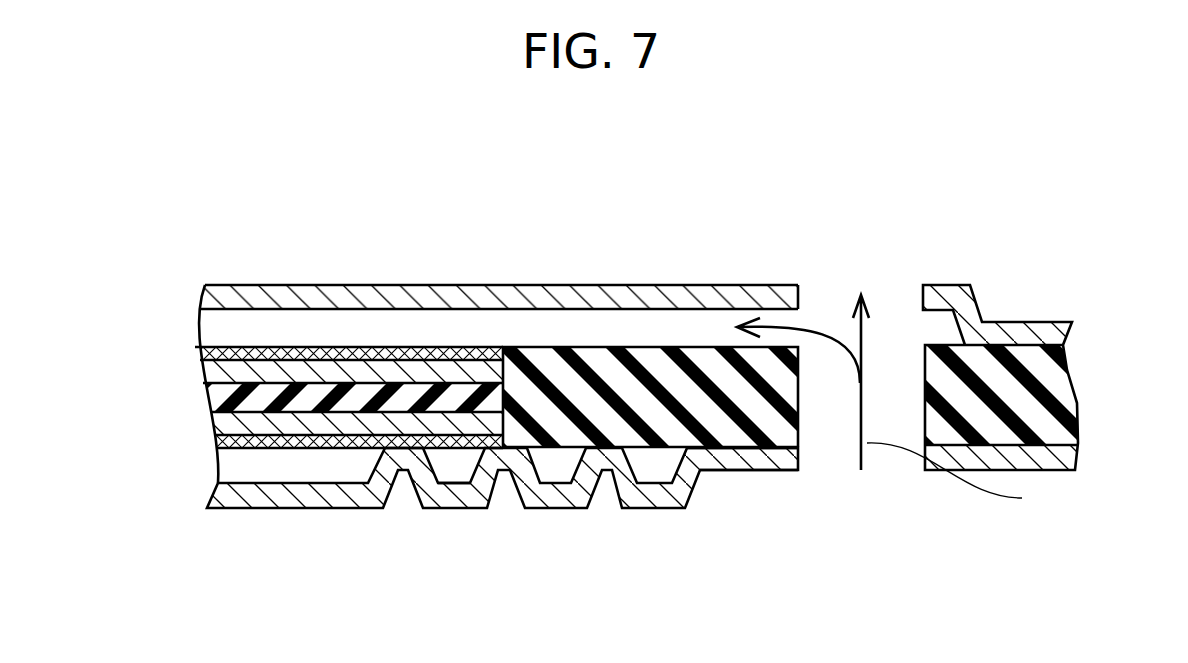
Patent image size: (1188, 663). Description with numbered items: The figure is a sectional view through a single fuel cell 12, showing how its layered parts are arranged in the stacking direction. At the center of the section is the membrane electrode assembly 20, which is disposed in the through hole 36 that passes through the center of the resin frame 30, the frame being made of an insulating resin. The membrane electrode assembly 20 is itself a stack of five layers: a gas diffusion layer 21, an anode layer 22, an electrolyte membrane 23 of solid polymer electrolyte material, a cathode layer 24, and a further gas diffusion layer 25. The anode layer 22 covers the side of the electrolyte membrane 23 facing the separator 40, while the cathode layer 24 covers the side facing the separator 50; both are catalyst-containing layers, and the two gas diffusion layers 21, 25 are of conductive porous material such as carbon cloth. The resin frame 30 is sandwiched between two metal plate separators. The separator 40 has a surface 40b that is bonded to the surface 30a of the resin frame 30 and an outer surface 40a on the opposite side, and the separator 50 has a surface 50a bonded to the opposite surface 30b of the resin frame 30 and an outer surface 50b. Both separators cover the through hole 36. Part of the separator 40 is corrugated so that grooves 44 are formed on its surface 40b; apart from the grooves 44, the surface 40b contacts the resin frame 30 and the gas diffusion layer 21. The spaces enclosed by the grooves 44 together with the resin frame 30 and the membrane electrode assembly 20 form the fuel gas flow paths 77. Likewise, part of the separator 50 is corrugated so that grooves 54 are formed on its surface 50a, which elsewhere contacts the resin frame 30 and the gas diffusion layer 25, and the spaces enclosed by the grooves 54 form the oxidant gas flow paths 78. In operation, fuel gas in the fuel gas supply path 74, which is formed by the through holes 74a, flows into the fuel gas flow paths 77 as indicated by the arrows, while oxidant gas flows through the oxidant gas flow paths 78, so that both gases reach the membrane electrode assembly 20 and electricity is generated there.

The fuel cell 12 is at (112, 216).
The membrane electrode assembly 20 is at (87, 303).
The gas diffusion layer 21 is at (193, 353).
The anode layer 22 is at (205, 376).
The electrolyte membrane 23 is at (218, 392).
The cathode layer 24 is at (220, 422).
The gas diffusion layer 25 is at (218, 438).
The resin frame 30 is at (1057, 390).
The surface of resin frame 30a is at (575, 347).
The surface of resin frame 30b is at (790, 450).
The through hole 36 is at (483, 418).
The separator 40 is at (228, 299).
The surface of separator 40a is at (390, 287).
The surface of separator 40b is at (452, 311).
The grooves 44 is at (624, 312).
The separator 50 is at (233, 497).
The surface of separator 50a is at (748, 446).
The surface of separator 50b is at (728, 470).
The grooves 54 is at (450, 485).
The fuel gas supply path 74 is at (885, 443).
The through hole 74a is at (870, 502).
The fuel gas flow paths 77 is at (713, 317).
The oxidant gas flow paths 78 is at (315, 470).